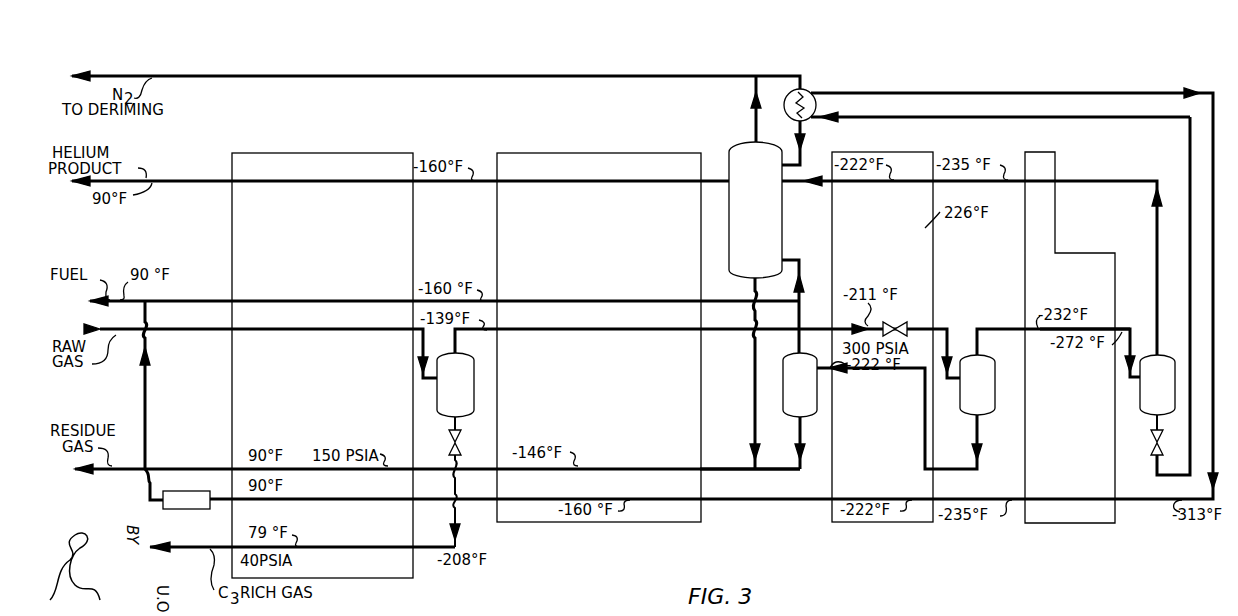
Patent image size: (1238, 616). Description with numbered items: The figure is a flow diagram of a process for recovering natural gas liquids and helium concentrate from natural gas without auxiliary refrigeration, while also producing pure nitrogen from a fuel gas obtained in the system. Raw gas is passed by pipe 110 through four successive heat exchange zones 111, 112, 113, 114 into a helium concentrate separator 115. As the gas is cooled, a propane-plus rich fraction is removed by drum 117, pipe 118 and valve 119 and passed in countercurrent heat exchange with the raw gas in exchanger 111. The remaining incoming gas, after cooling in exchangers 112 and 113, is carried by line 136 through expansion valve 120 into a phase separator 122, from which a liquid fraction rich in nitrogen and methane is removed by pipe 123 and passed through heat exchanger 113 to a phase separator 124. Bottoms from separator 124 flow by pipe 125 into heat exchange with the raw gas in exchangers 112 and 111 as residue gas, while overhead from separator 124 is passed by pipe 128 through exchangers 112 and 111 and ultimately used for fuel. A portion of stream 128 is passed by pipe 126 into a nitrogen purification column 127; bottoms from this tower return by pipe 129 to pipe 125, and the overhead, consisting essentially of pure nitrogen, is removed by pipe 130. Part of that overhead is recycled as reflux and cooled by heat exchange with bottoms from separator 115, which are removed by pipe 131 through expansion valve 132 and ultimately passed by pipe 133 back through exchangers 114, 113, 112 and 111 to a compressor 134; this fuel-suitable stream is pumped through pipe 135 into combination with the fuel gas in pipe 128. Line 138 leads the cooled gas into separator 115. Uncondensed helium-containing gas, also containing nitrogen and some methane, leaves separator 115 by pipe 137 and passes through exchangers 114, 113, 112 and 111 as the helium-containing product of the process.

The pipe 110 is at (305, 328).
The heat exchange zone 111 is at (330, 275).
The heat exchange zone 112 is at (610, 273).
The heat exchange zone 113 is at (890, 218).
The heat exchange zone 114 is at (1080, 273).
The helium concentrate separator 115 is at (1140, 398).
The drum 117 is at (470, 385).
The pipe 118 is at (465, 428).
The valve 119 is at (468, 446).
The expansion valve 120 is at (886, 318).
The phase separator 122 is at (995, 394).
The pipe 123 is at (910, 458).
The phase separator 124 is at (805, 397).
The pipe 125 is at (728, 469).
The pipe 126 is at (810, 278).
The nitrogen purification column 127 is at (770, 220).
The pipe 128 is at (690, 300).
The pipe 129 is at (748, 446).
The pipe 130 is at (748, 96).
The pipe 131 is at (1157, 425).
The expansion valve 132 is at (1153, 442).
The pipe 133 is at (1116, 92).
The compressor 134 is at (190, 510).
The pipe 135 is at (148, 356).
The gas line 136 is at (599, 328).
The pipe 137 is at (1126, 180).
The line 138 is at (1036, 331).